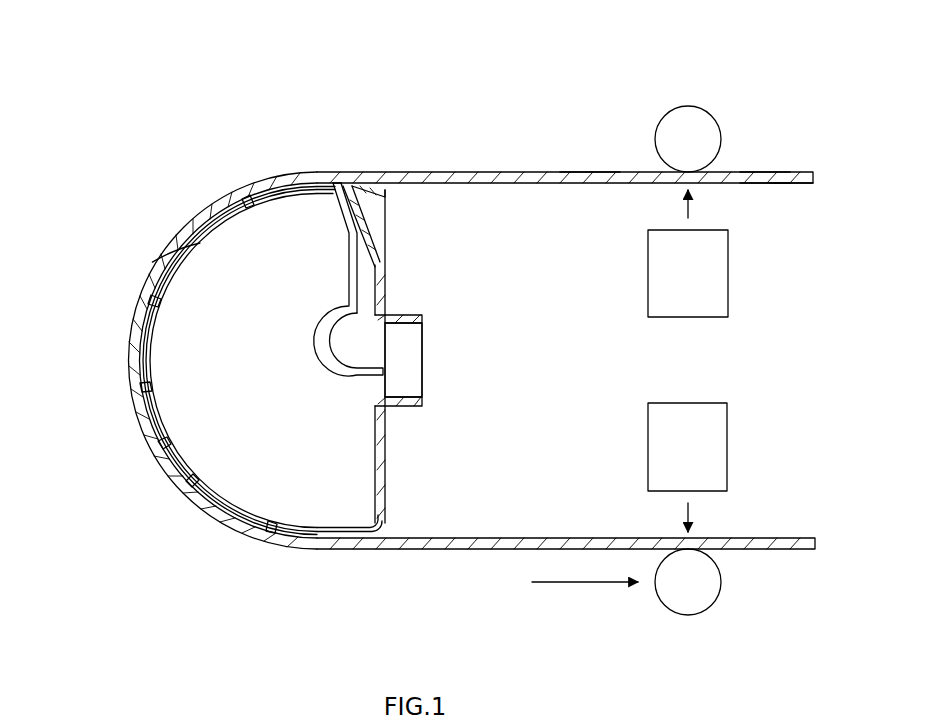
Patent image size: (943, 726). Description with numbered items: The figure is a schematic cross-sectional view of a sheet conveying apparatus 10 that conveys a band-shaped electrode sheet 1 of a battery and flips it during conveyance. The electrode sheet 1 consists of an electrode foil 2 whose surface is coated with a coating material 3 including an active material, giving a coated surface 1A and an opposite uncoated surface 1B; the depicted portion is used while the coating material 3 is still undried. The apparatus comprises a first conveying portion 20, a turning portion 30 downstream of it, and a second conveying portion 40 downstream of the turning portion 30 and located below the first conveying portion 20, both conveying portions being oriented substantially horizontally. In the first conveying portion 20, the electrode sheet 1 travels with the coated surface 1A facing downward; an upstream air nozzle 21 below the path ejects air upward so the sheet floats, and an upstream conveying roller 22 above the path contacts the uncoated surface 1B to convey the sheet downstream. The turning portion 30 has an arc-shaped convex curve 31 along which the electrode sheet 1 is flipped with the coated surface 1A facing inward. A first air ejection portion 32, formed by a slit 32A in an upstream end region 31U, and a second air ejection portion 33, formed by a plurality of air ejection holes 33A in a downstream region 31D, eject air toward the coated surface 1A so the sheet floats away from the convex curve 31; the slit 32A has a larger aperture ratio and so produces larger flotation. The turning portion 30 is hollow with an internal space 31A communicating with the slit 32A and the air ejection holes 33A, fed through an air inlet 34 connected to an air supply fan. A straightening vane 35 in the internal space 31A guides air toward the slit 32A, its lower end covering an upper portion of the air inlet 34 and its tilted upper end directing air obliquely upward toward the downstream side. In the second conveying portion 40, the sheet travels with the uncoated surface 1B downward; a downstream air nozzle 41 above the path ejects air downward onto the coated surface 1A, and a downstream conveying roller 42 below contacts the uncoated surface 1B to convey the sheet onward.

The sheet conveying apparatus 10 is at (228, 92).
The electrode sheet 1 is at (515, 170).
The coated surface 1A is at (768, 183).
The uncoated surface 1B is at (768, 172).
The electrode foil 2 is at (588, 172).
The coating material 3 is at (786, 183).
The first conveying portion 20 is at (607, 192).
The upstream air nozzle 21 is at (728, 302).
The upstream conveying roller 22 is at (688, 105).
The turning portion 30 is at (197, 222).
The convex curve 31 is at (148, 282).
The internal space 31A is at (267, 327).
The downstream region 31D is at (152, 238).
The upstream end region 31U is at (375, 175).
The first air ejection portion 32 is at (330, 178).
The slit 32A is at (336, 178).
The second air ejection portion 33 is at (135, 355).
The air ejection holes 33A is at (243, 195).
The air inlet 34 is at (422, 360).
The straightening vane 35 is at (385, 215).
The second conveying portion 40 is at (606, 530).
The downstream air nozzle 41 is at (727, 445).
The downstream conveying roller 42 is at (688, 615).